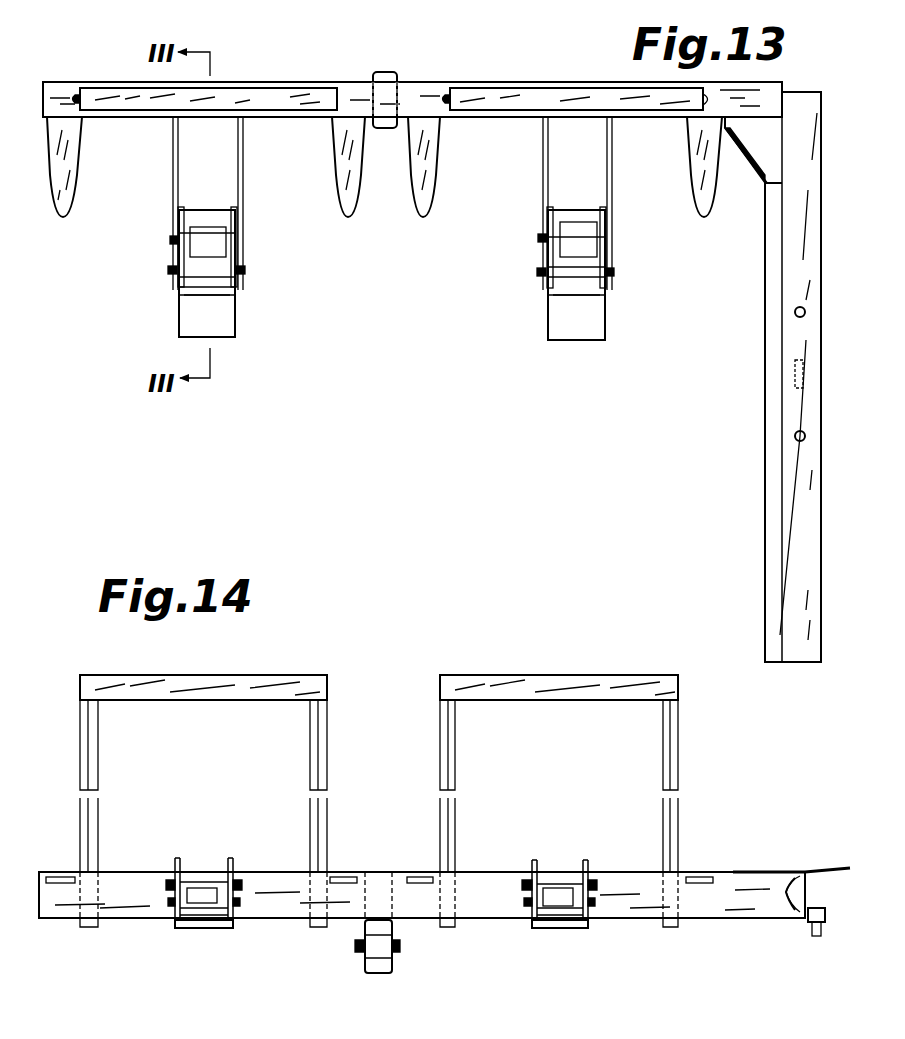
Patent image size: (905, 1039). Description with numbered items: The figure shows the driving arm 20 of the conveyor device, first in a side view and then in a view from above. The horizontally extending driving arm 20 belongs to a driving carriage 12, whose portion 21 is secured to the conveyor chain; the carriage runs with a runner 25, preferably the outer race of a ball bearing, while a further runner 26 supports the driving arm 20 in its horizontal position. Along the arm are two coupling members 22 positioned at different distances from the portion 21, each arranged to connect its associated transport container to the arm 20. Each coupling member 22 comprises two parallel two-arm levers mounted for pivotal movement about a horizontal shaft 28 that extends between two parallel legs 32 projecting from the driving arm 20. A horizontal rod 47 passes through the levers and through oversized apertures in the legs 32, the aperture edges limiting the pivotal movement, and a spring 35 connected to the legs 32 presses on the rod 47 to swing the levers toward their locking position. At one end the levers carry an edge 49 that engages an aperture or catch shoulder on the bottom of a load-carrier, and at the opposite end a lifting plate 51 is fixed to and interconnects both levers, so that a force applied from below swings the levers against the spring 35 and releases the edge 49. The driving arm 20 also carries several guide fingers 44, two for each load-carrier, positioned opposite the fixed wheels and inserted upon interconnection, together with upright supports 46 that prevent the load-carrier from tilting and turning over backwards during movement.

In FIG. 13, the driving carriage 12 is at (816, 135).
In FIG. 13, the driving arm 20 is at (430, 100).
In FIG. 14, the driving arm 20 is at (422, 895).
In FIG. 14, the portion of the driving carriage 21 is at (838, 868).
In FIG. 13, the coupling member 22 is at (177, 318).
In FIG. 14, the coupling member 22 is at (204, 930).
In FIG. 14, the runner 25 is at (818, 938).
In FIG. 13, the runner 26 is at (387, 78).
In FIG. 14, the runner 26 is at (380, 975).
In FIG. 13, the horizontal shaft 28 is at (246, 278).
In FIG. 13, the legs 32 is at (238, 152).
In FIG. 13, the spring 35 is at (213, 250).
In FIG. 13, the guide fingers 44 is at (72, 172).
In FIG. 14, the guide fingers 44 is at (65, 876).
In FIG. 13, the upright supports 46 is at (288, 97).
In FIG. 14, the upright supports 46 is at (292, 676).
In FIG. 13, the horizontal rod 47 is at (176, 241).
In FIG. 13, the edge 49 is at (236, 216).
In FIG. 13, the lifting plate 51 is at (222, 335).